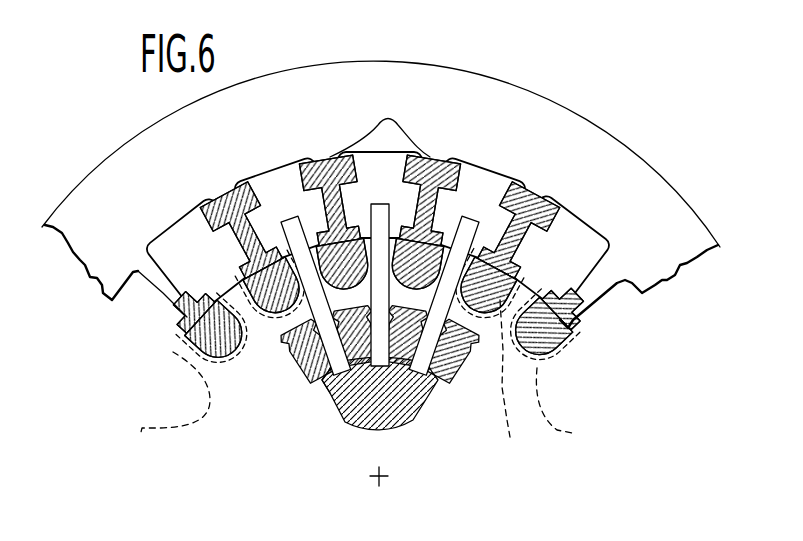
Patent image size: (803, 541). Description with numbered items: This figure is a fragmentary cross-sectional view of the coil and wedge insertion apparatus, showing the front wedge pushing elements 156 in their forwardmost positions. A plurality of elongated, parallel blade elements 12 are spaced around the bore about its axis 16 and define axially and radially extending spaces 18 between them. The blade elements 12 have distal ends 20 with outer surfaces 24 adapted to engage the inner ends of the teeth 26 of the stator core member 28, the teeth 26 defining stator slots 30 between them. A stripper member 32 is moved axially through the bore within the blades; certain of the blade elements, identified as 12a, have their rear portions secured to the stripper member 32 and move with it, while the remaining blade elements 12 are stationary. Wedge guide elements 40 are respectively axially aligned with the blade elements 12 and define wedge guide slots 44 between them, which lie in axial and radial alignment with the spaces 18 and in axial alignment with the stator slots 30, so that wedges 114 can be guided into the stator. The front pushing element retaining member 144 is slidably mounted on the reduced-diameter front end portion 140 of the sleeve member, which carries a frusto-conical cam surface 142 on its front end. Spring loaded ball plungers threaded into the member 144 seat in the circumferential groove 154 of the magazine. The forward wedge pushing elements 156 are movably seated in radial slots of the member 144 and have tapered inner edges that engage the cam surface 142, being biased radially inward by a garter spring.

The stator core member 28 is at (643, 104).
The slots 30 is at (183, 240).
The wedge guide slots 44 is at (474, 180).
The wedge guide elements 40 is at (387, 122).
The wedges 114 is at (288, 220).
The forward wedge pushing elements 156 is at (473, 217).
The outer surfaces 24 is at (190, 320).
The teeth 26 is at (163, 290).
The blade elements 12 is at (483, 303).
The blade elements 12a is at (537, 360).
The distal ends 20 is at (232, 338).
The front pushing element retaining member 144 is at (305, 362).
The circumferential groove 154 is at (423, 373).
The frusto-conical cam surface 142 is at (310, 383).
The front end portion 140 is at (366, 398).
The axis 16 is at (384, 478).
The spaces 18 is at (501, 372).
The stripper member 32 is at (560, 367).